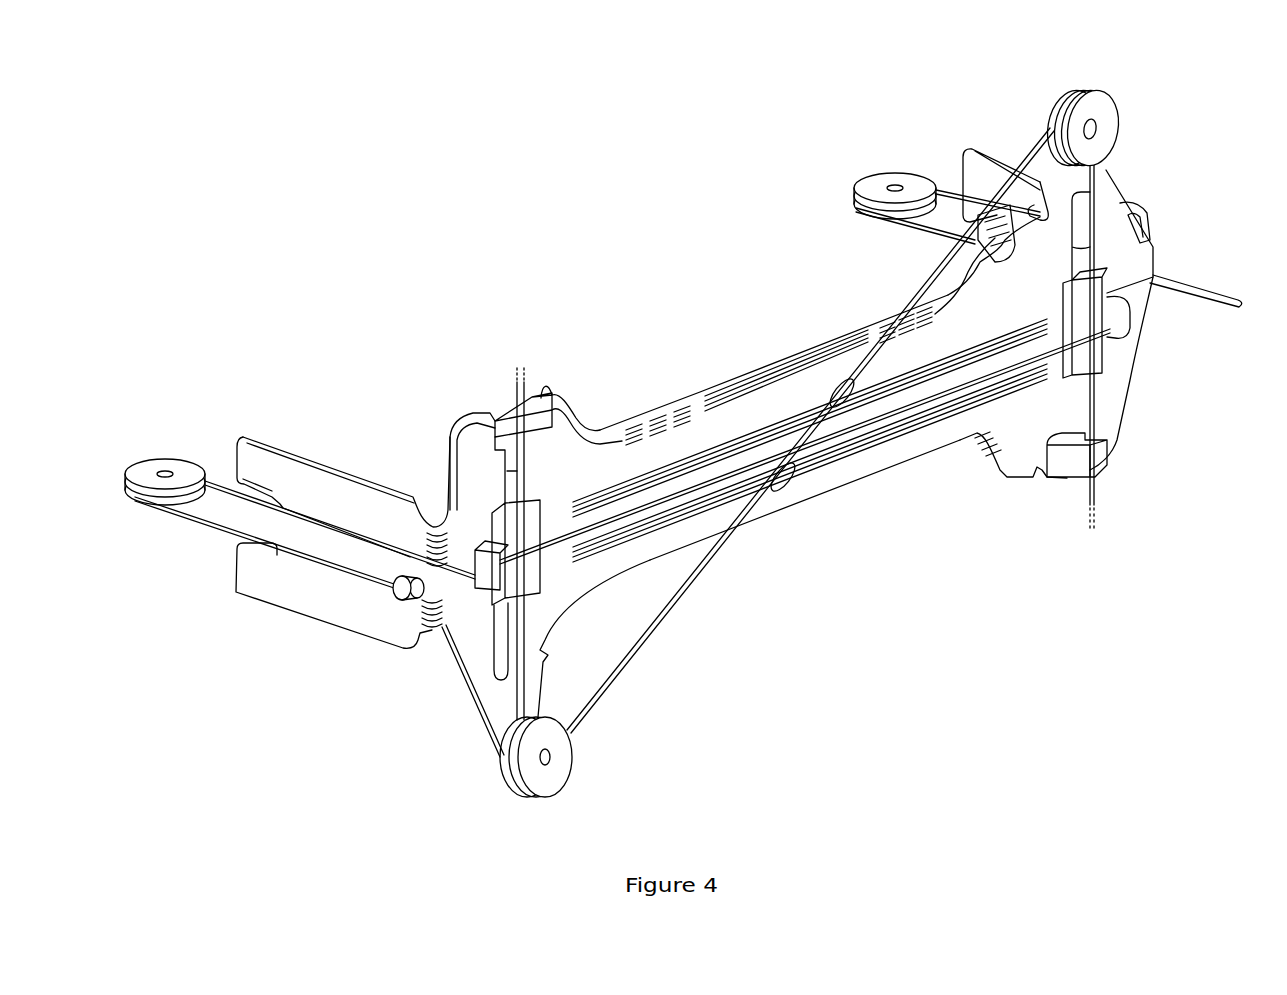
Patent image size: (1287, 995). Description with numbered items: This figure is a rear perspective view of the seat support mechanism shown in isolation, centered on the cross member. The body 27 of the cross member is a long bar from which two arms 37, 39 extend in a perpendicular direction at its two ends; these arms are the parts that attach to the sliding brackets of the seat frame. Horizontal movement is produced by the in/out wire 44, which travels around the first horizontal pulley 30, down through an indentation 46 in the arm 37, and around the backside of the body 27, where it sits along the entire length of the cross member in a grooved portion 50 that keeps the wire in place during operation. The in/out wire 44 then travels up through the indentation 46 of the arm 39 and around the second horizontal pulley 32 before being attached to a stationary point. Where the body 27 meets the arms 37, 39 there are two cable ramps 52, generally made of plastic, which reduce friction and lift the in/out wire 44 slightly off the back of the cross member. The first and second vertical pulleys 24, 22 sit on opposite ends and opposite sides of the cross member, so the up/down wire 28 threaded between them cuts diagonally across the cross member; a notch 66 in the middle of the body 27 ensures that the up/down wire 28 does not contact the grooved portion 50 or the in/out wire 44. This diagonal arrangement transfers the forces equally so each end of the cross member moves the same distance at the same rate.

The second vertical pulley 22 is at (1097, 105).
The first vertical pulley 24 is at (560, 757).
The body of the cross member 27 is at (725, 390).
The up/down wire 28 is at (702, 565).
The first horizontal pulley 30 is at (148, 460).
The second horizontal pulley 32 is at (880, 178).
The arm 37 is at (356, 615).
The arm 39 is at (966, 180).
The in/out wire 44 is at (295, 550).
The indentation 46 is at (356, 553).
The grooved portion 50 is at (910, 420).
The cable ramp 52 is at (1120, 333).
The notch 66 is at (794, 470).